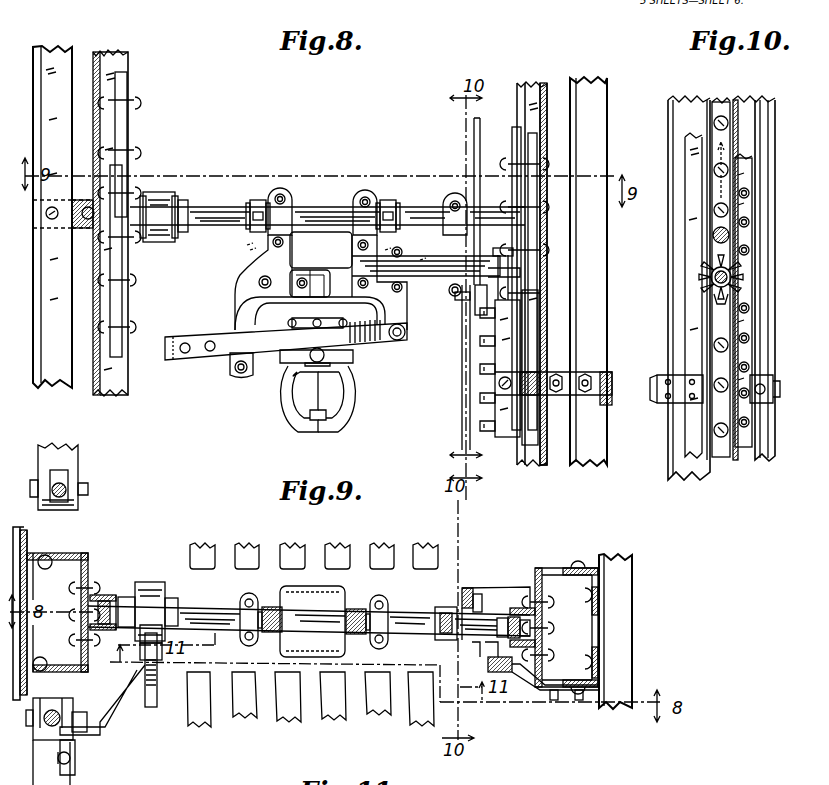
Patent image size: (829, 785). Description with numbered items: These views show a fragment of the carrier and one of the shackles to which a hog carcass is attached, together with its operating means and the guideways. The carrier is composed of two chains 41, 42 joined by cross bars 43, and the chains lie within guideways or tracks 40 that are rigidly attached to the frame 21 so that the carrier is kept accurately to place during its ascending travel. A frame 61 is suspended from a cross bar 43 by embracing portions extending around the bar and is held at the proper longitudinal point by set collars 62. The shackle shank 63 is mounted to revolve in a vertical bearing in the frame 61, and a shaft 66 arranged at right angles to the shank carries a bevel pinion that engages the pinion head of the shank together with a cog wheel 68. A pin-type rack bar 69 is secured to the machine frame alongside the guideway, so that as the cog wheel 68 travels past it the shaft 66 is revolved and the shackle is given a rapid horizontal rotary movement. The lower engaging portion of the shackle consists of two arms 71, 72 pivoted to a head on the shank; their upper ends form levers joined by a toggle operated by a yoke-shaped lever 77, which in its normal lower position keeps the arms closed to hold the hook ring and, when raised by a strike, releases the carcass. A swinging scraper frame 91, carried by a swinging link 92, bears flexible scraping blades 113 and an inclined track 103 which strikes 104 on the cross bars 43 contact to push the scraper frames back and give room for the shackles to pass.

In FIG. 8, the frame 21 is at (60, 383).
In FIG. 10, the frame 21 is at (670, 232).
In FIG. 9, the frame 21 is at (612, 632).
In FIG. 8, the guideways or tracks 40 is at (128, 62).
In FIG. 10, the guideways or tracks 40 is at (748, 100).
In FIG. 9, the guideways or tracks 40 is at (98, 596).
In FIG. 8, the carrier chain 41 is at (132, 128).
In FIG. 9, the carrier chain 41 is at (76, 622).
In FIG. 8, the carrier chain 42 is at (512, 142).
In FIG. 10, the carrier chain 42 is at (720, 459).
In FIG. 9, the carrier chain 42 is at (535, 621).
In FIG. 8, the cross bar 43 is at (412, 222).
In FIG. 10, the cross bar 43 is at (730, 240).
In FIG. 9, the cross bar 43 is at (188, 613).
In FIG. 8, the frame 61 is at (262, 270).
In FIG. 9, the frame 61 is at (312, 621).
In FIG. 8, the set collars 62 is at (252, 200).
In FIG. 9, the set collars 62 is at (248, 597).
In FIG. 8, the shackle shank 63 is at (312, 311).
In FIG. 8, the shaft 66 is at (510, 284).
In FIG. 10, the shaft 66 is at (711, 274).
In FIG. 8, the cog wheel 68 is at (483, 297).
In FIG. 10, the cog wheel 68 is at (707, 294).
In FIG. 9, the cog wheel 68 is at (480, 594).
In FIG. 8, the rack bar 69 is at (500, 440).
In FIG. 10, the rack bar 69 is at (748, 211).
In FIG. 9, the rack bar 69 is at (488, 660).
In FIG. 8, the shackle arm 71 is at (285, 398).
In FIG. 8, the shackle arm 72 is at (352, 398).
In FIG. 8, the yoke-shaped lever 77 is at (190, 337).
In FIG. 9, the swinging frame 91 is at (68, 455).
In FIG. 9, the swinging link 92 is at (70, 490).
In FIG. 9, the inclined track 103 is at (157, 672).
In FIG. 8, the strike 104 is at (160, 245).
In FIG. 9, the strike 104 is at (150, 582).
In FIG. 9, the flexible scraping blade 113 is at (342, 548).